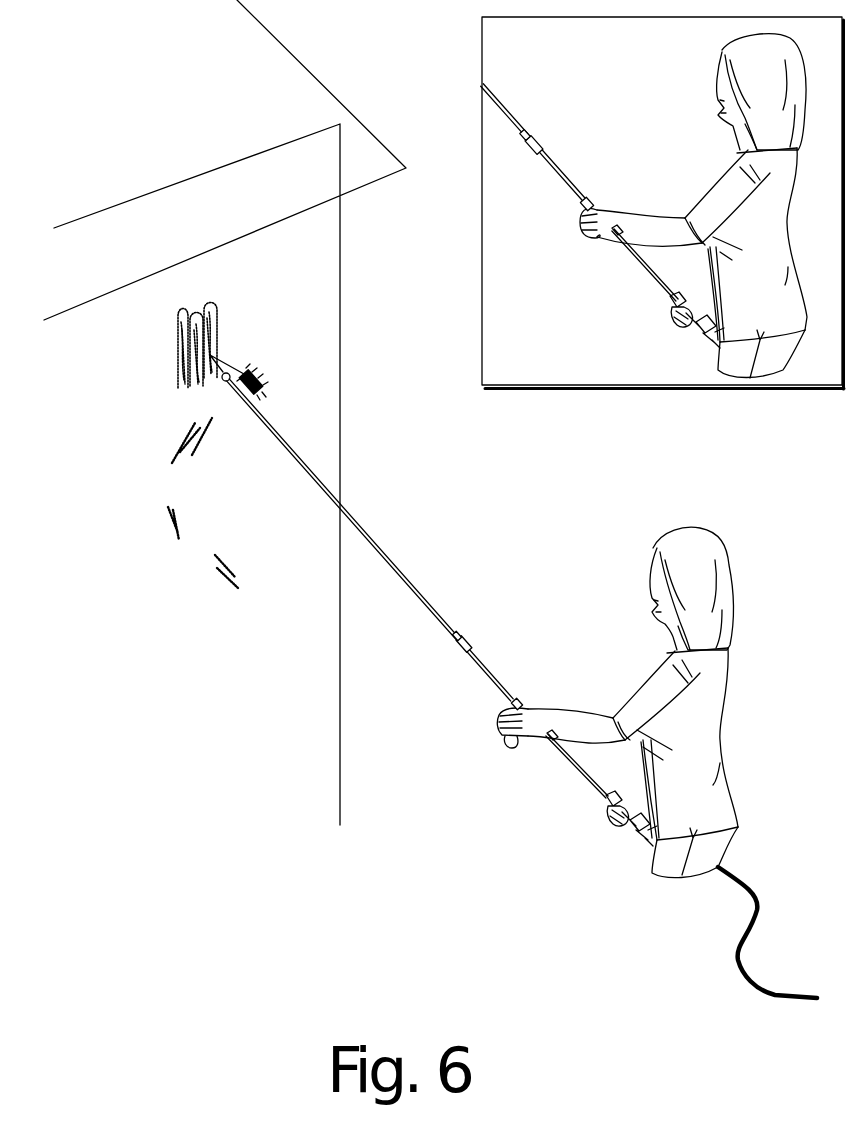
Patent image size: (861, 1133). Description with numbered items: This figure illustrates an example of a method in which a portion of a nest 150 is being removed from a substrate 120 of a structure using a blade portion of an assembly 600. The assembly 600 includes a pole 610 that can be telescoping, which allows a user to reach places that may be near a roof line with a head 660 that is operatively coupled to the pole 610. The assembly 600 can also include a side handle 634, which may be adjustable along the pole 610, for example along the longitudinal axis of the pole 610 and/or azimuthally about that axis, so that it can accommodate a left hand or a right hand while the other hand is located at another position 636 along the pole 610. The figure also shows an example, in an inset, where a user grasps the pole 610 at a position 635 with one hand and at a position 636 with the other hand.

The substrate 120 is at (141, 410).
The nest 150 is at (238, 300).
The assembly 600 is at (537, 543).
The pole 610 is at (368, 502).
The side handle 634 is at (500, 760).
The position 635 is at (602, 257).
The position 636 is at (595, 840).
The head 660 is at (257, 358).